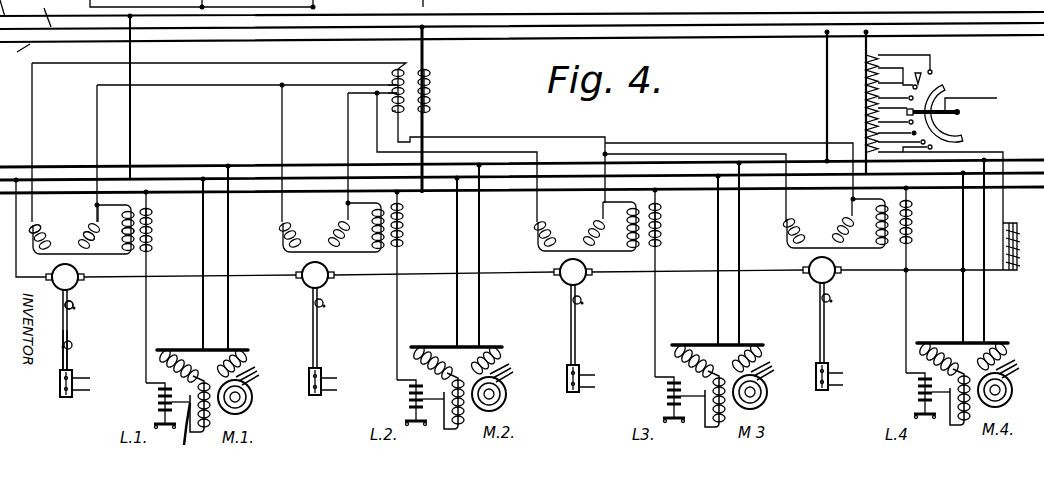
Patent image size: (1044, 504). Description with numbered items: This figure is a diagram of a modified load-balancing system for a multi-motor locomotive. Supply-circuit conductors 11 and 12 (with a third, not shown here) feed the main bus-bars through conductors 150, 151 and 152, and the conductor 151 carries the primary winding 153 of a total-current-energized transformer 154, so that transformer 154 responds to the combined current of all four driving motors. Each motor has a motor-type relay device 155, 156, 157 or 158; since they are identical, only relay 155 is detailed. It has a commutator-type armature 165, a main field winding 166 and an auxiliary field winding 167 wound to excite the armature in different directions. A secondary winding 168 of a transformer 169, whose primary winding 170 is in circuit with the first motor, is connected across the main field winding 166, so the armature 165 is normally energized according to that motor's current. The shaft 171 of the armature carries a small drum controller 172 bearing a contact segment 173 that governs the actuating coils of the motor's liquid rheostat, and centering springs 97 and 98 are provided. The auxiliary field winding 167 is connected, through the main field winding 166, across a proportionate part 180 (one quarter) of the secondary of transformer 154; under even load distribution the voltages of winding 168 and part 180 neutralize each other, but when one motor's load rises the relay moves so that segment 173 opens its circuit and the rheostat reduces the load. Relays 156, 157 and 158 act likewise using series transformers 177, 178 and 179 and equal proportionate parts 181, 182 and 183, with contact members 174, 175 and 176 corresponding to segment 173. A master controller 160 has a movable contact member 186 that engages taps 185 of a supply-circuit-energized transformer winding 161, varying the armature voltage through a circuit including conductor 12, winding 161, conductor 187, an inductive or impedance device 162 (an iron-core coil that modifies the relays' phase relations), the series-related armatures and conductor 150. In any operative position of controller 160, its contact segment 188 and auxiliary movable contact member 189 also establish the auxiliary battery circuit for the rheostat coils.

The main supply-circuit conductor 11 is at (42, 13).
The main supply-circuit conductor 12 is at (15, 54).
The conductor 150 is at (130, 53).
The conductor 151 is at (424, 52).
The conductor 152 is at (827, 60).
The primary winding 153 is at (432, 92).
The transformer 154 is at (411, 109).
The motor-type relay device 155 is at (85, 302).
The motor-type relay device 156 is at (326, 299).
The motor-type relay device 157 is at (582, 297).
The motor-type relay device 158 is at (835, 294).
The master controller 160 is at (924, 159).
The transformer winding 161 is at (866, 97).
The inductive or impedance device 162 is at (1043, 241).
The commutator-type armature 165 is at (57, 288).
The main field winding 166 is at (84, 237).
The auxiliary field winding 167 is at (44, 231).
The secondary winding 168 is at (123, 246).
The transformer 169 is at (85, 239).
The primary winding 170 is at (150, 244).
The shaft 171 is at (70, 327).
The drum controller 172 is at (61, 384).
The contact segment 173 is at (94, 383).
The contact member 174 is at (336, 381).
The contact member 175 is at (594, 378).
The contact member 176 is at (843, 376).
The series transformer 177 is at (403, 240).
The series transformer 178 is at (660, 240).
The series transformer 179 is at (912, 237).
The proportionate part of secondary winding 180 is at (411, 56).
The proportionate part of secondary winding 181 is at (390, 86).
The proportionate part of secondary winding 182 is at (392, 102).
The proportionate part of secondary winding 183 is at (392, 111).
The taps 185 is at (919, 73).
The movable contact member 186 is at (908, 108).
The conductor 187 is at (999, 151).
The contact segment 188 is at (945, 84).
The auxiliary movable contact member 189 is at (944, 110).
The centering spring 97 is at (73, 306).
The centering spring 98 is at (73, 345).